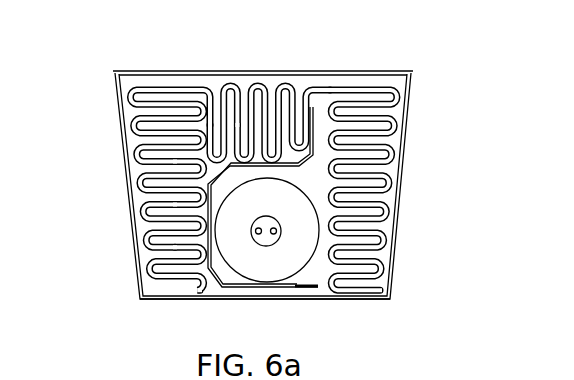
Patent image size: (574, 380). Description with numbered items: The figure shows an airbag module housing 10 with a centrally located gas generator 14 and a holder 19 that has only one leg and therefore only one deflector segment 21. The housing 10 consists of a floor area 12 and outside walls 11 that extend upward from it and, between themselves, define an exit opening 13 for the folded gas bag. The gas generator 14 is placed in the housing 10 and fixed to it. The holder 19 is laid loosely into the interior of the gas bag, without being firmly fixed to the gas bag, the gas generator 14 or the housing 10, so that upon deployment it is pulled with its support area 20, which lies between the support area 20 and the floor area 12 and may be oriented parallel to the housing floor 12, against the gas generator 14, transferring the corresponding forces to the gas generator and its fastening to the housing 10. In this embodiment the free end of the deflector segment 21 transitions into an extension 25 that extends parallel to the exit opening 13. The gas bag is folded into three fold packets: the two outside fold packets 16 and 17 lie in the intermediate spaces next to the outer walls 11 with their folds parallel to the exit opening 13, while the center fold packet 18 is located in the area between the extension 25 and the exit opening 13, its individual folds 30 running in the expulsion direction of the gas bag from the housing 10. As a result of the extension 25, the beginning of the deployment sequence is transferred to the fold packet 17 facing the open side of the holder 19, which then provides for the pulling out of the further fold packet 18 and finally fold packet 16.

The housing 10 is at (141, 300).
The outside walls 11 is at (122, 139).
The floor area 12 is at (182, 299).
The exit opening 13 is at (156, 70).
The gas generator 14 is at (297, 232).
The outside fold packet 16 is at (148, 107).
The outside fold packet 17 is at (353, 112).
The central fold packet 18 is at (240, 112).
The holder 19 is at (170, 278).
The support area 20 is at (314, 289).
The deflector segment 21 is at (185, 207).
The extension 25 is at (273, 118).
The individual folds 30 is at (158, 178).